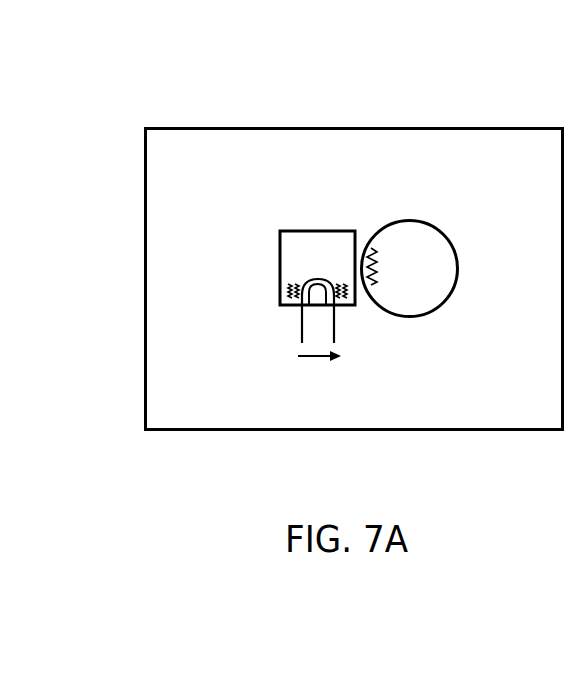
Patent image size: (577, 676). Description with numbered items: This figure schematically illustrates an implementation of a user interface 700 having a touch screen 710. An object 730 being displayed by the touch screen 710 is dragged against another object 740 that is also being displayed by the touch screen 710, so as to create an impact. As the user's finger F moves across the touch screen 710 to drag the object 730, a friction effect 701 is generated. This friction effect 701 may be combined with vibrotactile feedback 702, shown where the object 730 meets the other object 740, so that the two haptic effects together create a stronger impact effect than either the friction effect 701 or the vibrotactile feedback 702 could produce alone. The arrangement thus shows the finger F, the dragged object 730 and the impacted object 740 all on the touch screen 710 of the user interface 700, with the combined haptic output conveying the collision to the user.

The user interface 700 is at (227, 86).
The touch screen 710 is at (178, 203).
The object 730 is at (304, 240).
The another object 740 is at (428, 250).
The vibrotactile feedback 702 is at (383, 252).
The friction effect 701 is at (291, 311).
The user's finger F is at (337, 318).